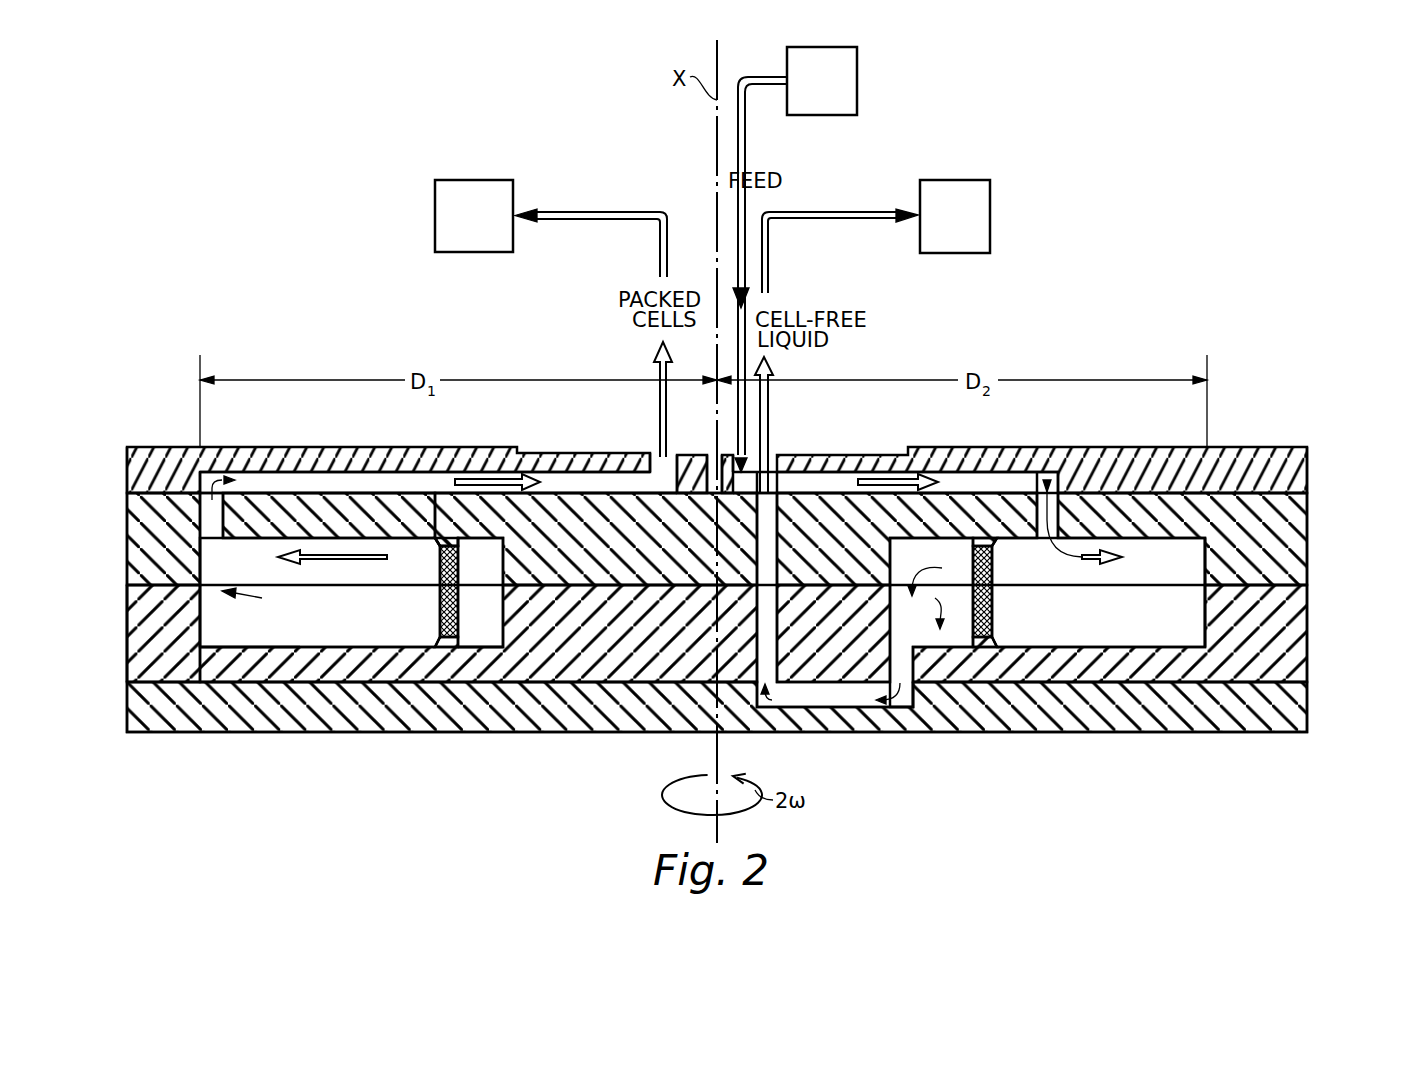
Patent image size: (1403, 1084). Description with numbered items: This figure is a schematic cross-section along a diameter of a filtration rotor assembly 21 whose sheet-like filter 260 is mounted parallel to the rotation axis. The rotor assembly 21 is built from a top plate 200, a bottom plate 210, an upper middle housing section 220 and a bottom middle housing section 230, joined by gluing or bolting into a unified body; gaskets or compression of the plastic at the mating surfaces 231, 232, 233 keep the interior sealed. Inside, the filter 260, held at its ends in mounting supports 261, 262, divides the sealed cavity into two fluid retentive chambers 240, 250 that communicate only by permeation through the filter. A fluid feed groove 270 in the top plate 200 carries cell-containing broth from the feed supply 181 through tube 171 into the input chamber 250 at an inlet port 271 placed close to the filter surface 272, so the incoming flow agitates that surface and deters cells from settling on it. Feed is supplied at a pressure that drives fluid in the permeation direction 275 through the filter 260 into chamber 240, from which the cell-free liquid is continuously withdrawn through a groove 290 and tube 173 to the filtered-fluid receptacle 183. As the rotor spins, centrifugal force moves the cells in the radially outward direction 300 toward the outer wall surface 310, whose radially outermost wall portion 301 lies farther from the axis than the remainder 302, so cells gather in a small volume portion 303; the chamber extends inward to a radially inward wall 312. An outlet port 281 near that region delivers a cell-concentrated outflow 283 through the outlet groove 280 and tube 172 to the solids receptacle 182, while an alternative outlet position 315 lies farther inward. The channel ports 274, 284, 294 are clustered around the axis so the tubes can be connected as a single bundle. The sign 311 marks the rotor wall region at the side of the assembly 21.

The filtration rotor assembly 21 is at (376, 744).
The tube 171 is at (767, 56).
The tube 172 is at (620, 213).
The tube 173 is at (866, 212).
The feed supply 181 is at (844, 103).
The receptacle for concentrated solids 182 is at (496, 238).
The receptacle for filtered fluid 183 is at (977, 238).
The top plate 200 is at (1262, 447).
The bottom plate 210 is at (1277, 735).
The upper middle housing section 220 is at (761, 491).
The bottom middle housing section 230 is at (1297, 636).
The mating surface 231 is at (1322, 683).
The mating surface 232 is at (1322, 585).
The mating surface 233 is at (1322, 493).
The fluid retentive chamber 240 is at (508, 615).
The input chamber 250 is at (375, 615).
The filter 260 is at (452, 640).
The mounting support 261 is at (470, 645).
The mounting support 262 is at (466, 456).
The fluid feed groove 270 is at (968, 456).
The inlet port 271 is at (1057, 456).
The filter surface 272 is at (993, 610).
The channel port 274 is at (712, 458).
The permeation direction 275 is at (995, 559).
The outlet groove 280 is at (372, 458).
The outlet port 281 is at (212, 516).
The outflow 283 is at (222, 472).
The channel port 284 is at (659, 457).
The groove 290 is at (778, 735).
The channel port 294 is at (770, 456).
The radially outward direction 300 is at (323, 562).
The radially outermost wall portion 301 is at (205, 612).
The remainder of outer wall surface 302 is at (1205, 607).
The volume portion 303 is at (264, 597).
The outer wall surface 310 is at (210, 640).
The rotor side wall 311 is at (125, 663).
The radially inward wall 312 is at (476, 591).
The alternative outlet position 315 is at (315, 528).